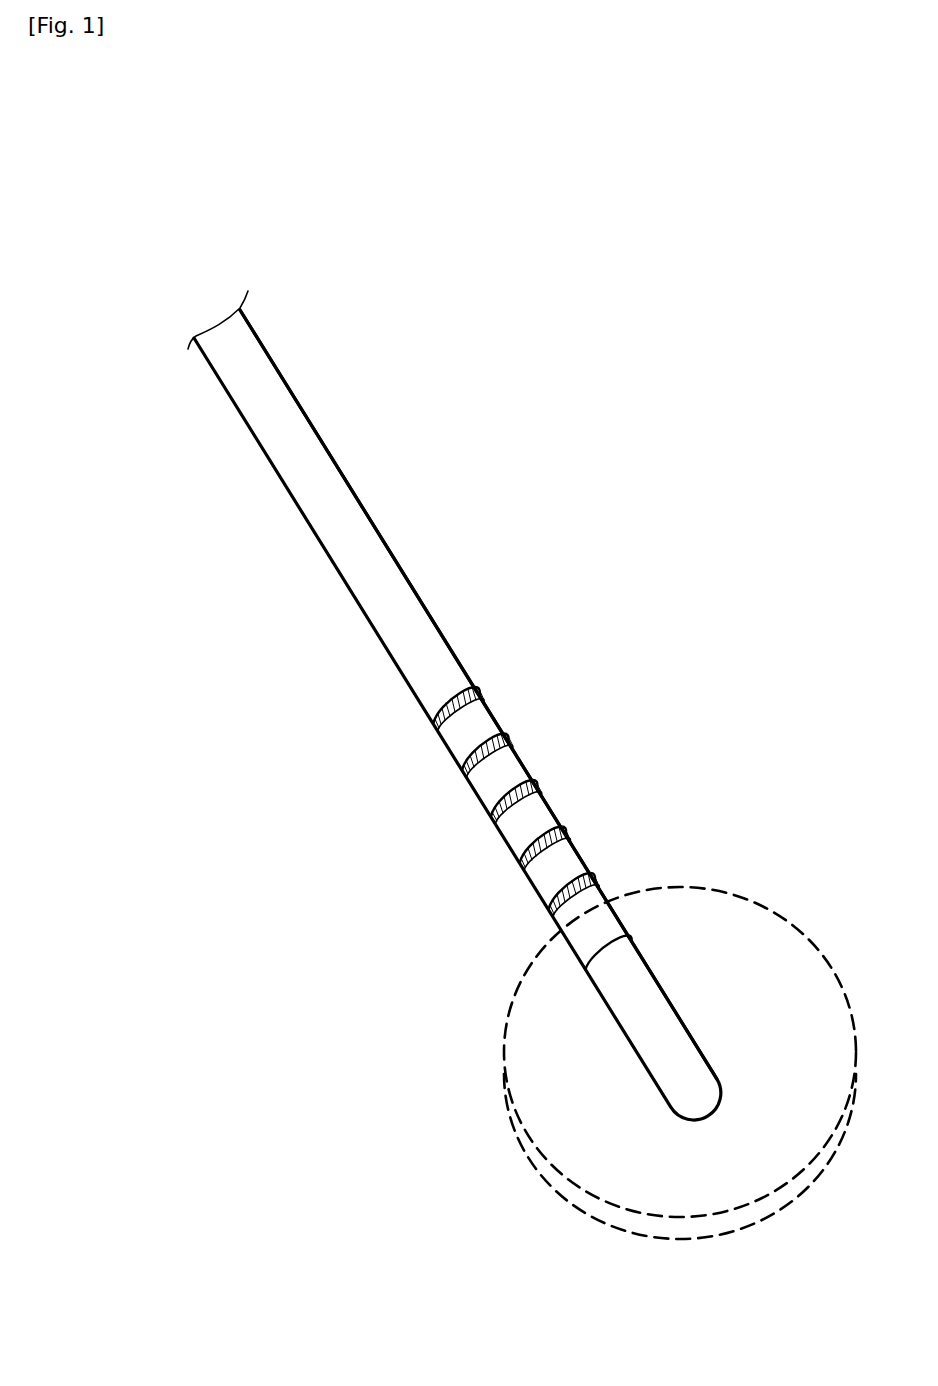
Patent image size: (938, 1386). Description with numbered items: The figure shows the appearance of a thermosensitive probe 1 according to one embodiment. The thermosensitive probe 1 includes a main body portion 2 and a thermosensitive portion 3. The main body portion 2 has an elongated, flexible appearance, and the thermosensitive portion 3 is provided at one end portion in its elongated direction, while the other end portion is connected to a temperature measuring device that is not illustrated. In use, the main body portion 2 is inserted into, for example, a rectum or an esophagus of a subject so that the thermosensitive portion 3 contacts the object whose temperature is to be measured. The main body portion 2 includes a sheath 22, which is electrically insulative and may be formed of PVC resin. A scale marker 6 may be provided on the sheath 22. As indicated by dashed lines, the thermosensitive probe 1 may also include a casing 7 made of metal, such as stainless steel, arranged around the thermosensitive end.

The thermosensitive probe 1 is at (522, 817).
The main body portion 2 is at (382, 682).
The sheath 22 is at (412, 612).
The scale marker 6 is at (500, 682).
The thermosensitive portion 3 is at (667, 1027).
The casing 7 is at (657, 1217).